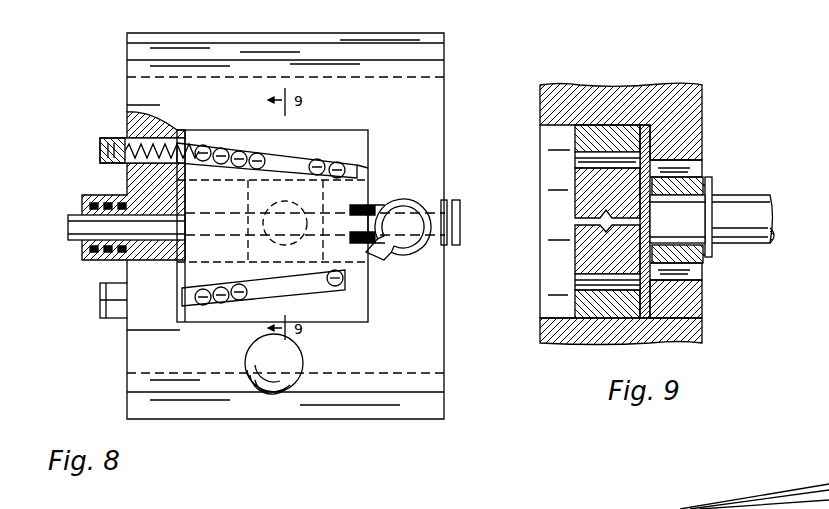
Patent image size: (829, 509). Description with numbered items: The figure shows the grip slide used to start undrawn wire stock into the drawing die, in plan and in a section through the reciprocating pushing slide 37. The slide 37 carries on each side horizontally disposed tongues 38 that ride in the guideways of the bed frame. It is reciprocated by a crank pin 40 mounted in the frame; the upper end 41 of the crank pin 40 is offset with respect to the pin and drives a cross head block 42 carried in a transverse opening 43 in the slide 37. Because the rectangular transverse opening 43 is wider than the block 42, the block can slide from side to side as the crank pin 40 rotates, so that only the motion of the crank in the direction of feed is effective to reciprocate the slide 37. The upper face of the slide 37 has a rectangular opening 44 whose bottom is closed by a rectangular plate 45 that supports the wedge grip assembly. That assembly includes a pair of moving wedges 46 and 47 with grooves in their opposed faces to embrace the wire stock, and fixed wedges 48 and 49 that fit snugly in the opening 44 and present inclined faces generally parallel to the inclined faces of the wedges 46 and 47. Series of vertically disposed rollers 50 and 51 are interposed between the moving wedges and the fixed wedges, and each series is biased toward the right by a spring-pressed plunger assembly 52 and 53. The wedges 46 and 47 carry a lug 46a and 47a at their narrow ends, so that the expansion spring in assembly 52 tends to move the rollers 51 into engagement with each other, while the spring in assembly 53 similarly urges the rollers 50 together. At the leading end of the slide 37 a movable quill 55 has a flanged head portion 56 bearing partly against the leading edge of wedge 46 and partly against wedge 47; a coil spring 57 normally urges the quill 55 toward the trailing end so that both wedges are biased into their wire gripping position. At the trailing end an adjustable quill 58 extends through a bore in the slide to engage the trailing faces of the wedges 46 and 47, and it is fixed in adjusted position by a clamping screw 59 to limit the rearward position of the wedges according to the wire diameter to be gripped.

In FIG. 8, the pushing slide 37 is at (425, 358).
In FIG. 9, the pushing slide 37 is at (616, 92).
In FIG. 8, the tongues 38 is at (432, 35).
In FIG. 9, the crank pin 40 is at (752, 205).
In FIG. 9, the upper end of crank pin 41 is at (677, 219).
In FIG. 8, the cross head block 42 is at (378, 170).
In FIG. 9, the cross head block 42 is at (690, 180).
In FIG. 8, the transverse opening 43 is at (285, 214).
In FIG. 9, the transverse opening 43 is at (690, 160).
In FIG. 8, the rectangular opening 44 is at (365, 130).
In FIG. 9, the rectangular opening 44 is at (555, 318).
In FIG. 9, the rectangular plate 45 is at (645, 318).
In FIG. 8, the moving wedge 46 is at (263, 281).
In FIG. 9, the moving wedge 46 is at (582, 252).
In FIG. 8, the lug 46a is at (343, 279).
In FIG. 8, the moving wedge 47 is at (272, 221).
In FIG. 9, the moving wedge 47 is at (578, 180).
In FIG. 8, the lug 47a is at (355, 166).
In FIG. 8, the fixed wedge 48 is at (272, 288).
In FIG. 9, the fixed wedge 48 is at (590, 306).
In FIG. 8, the fixed wedge 49 is at (267, 157).
In FIG. 9, the fixed wedge 49 is at (582, 135).
In FIG. 8, the rollers 50 is at (223, 304).
In FIG. 9, the rollers 50 is at (578, 283).
In FIG. 8, the rollers 51 is at (258, 153).
In FIG. 9, the rollers 51 is at (582, 158).
In FIG. 8, the spring-pressed plunger assembly 52 is at (150, 148).
In FIG. 8, the spring-pressed plunger assembly 53 is at (182, 304).
In FIG. 8, the movable quill 55 is at (80, 215).
In FIG. 8, the flanged head portion 56 is at (178, 258).
In FIG. 8, the coil spring 57 is at (96, 250).
In FIG. 8, the adjustable quill 58 is at (355, 204).
In FIG. 8, the clamping screw 59 is at (392, 256).